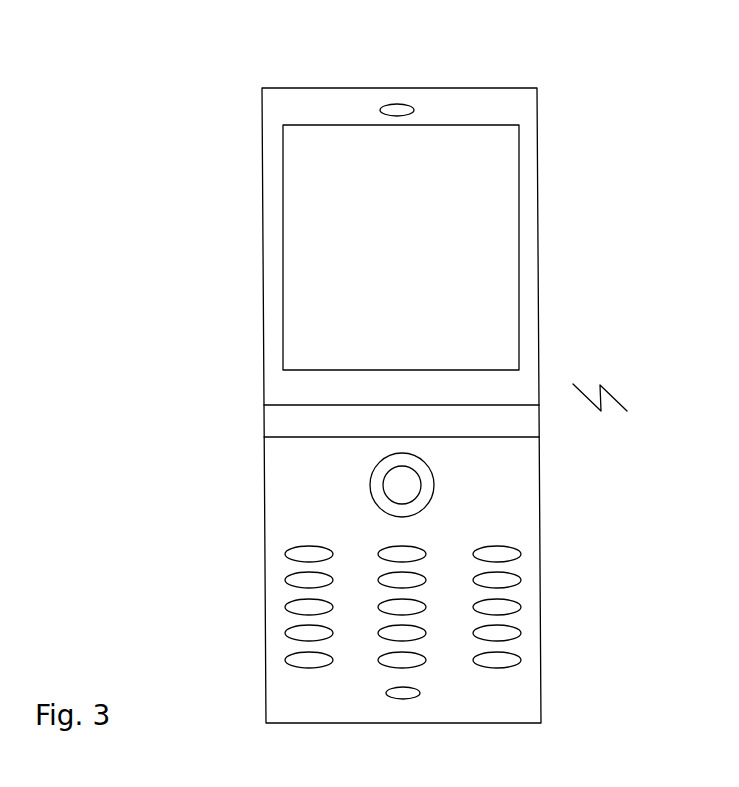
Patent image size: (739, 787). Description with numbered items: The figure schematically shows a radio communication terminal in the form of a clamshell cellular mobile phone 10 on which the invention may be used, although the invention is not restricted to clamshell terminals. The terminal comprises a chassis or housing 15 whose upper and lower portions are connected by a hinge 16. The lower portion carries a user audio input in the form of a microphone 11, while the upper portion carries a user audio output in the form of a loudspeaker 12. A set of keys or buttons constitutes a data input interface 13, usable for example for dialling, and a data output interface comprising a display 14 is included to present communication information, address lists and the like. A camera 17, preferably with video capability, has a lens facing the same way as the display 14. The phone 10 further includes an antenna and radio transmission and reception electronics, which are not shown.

The clamshell cellular mobile phone 10 is at (629, 418).
The microphone 11 is at (399, 700).
The loudspeaker 12 is at (398, 110).
The data input interface 13 is at (287, 598).
The display 14 is at (300, 352).
The housing 15 is at (262, 125).
The hinge 16 is at (268, 426).
The camera 17 is at (385, 483).